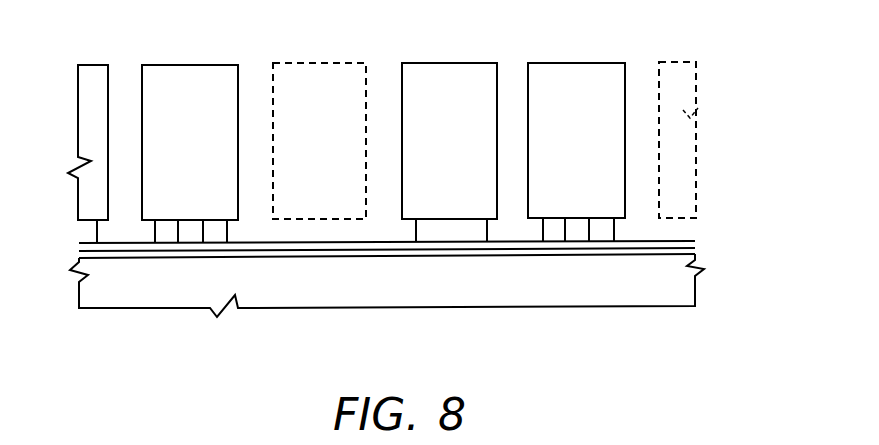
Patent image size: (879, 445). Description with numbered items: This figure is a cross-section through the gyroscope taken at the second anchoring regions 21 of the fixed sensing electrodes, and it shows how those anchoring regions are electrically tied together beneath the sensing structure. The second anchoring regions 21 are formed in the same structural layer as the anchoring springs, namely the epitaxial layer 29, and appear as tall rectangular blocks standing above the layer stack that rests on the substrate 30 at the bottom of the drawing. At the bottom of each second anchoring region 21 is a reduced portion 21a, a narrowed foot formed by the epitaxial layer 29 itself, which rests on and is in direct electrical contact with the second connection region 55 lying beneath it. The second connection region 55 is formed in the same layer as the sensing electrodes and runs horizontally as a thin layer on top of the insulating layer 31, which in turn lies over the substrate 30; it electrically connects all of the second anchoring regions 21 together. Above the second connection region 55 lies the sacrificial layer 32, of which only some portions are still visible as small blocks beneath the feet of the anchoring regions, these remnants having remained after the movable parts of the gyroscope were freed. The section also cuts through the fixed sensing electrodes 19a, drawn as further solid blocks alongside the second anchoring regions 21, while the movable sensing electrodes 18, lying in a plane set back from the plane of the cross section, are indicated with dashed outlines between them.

The movable sensing electrode 18 is at (283, 63).
The fixed sensing electrode 19a is at (95, 72).
The second anchoring region 21 is at (173, 75).
The reduced portion 21a is at (192, 233).
The epitaxial layer 29 is at (80, 125).
The substrate 30 is at (663, 295).
The insulating layer 31 is at (683, 251).
The sacrificial layer 32 is at (218, 233).
The second connection region 55 is at (692, 242).